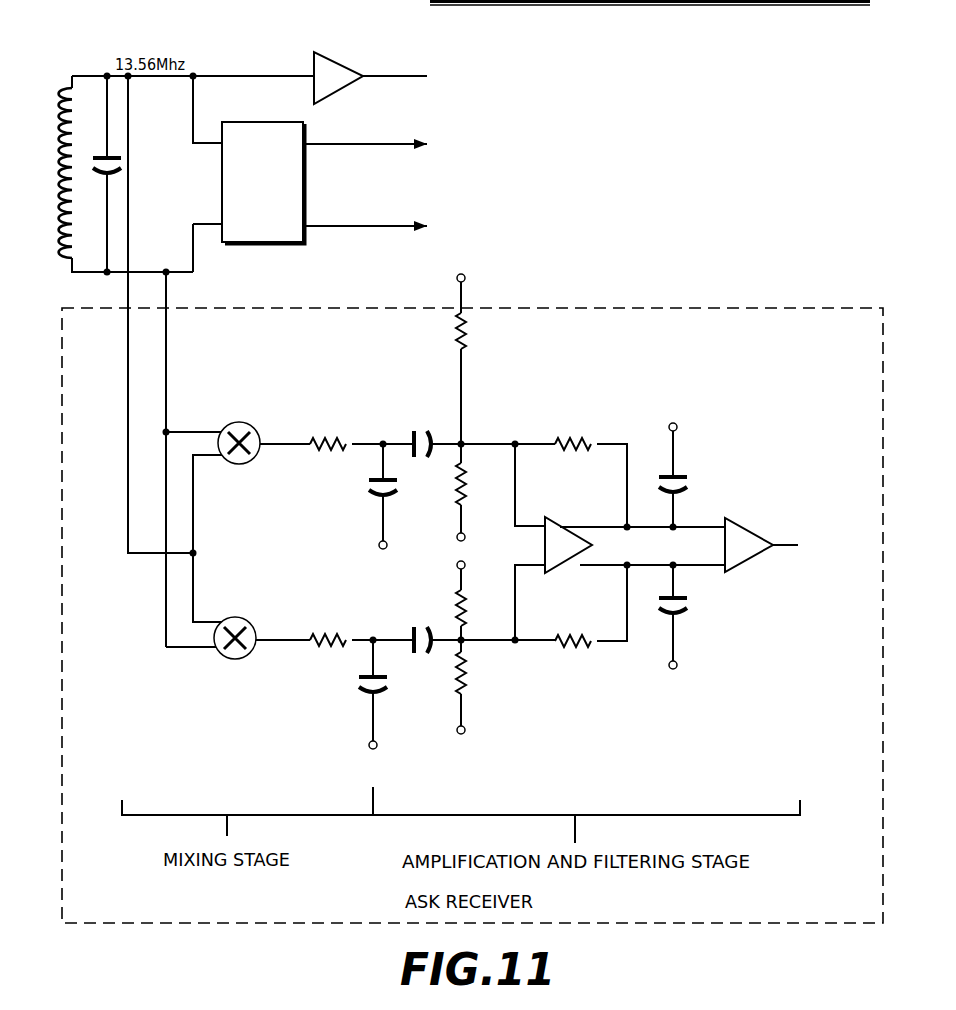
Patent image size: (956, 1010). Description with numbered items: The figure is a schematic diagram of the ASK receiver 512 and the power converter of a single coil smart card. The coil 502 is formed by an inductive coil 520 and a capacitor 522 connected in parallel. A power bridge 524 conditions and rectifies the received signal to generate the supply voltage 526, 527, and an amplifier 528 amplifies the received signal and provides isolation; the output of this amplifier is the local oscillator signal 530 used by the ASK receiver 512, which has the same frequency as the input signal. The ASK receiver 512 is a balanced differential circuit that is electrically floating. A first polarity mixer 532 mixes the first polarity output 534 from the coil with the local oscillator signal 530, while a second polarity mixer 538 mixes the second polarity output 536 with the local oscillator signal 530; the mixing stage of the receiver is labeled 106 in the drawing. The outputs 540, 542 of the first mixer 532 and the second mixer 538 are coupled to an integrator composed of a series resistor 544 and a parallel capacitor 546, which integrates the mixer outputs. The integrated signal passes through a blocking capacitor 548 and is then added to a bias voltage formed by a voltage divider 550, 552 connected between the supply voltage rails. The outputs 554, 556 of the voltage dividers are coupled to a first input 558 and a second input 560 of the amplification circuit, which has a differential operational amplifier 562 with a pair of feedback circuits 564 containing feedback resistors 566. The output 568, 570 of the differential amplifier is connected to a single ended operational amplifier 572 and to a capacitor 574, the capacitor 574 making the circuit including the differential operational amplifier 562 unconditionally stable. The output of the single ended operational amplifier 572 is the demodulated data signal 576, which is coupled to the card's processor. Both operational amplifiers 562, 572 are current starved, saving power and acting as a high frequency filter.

The coil 502 is at (42, 72).
The inductive coil 520 is at (66, 262).
The capacitor 522 is at (112, 155).
The power bridge 524 is at (250, 108).
The supply voltage 526 is at (408, 146).
The supply voltage 527 is at (403, 222).
The amplifier 528 is at (327, 52).
The local oscillator signal 530 is at (417, 74).
The ASK receiver 512 is at (368, 306).
The first polarity output 534 is at (166, 325).
The second polarity output 536 is at (128, 370).
The first polarity mixer 532 is at (240, 464).
The second polarity mixer 538 is at (250, 656).
The mixing stage 106 is at (203, 620).
The output of the first mixer 540 is at (300, 444).
The output of the second mixer 542 is at (263, 632).
The series resistor 544 is at (352, 432).
The parallel capacitor 546 is at (410, 483).
The blocking capacitor 548 is at (424, 428).
The voltage divider 550 is at (468, 330).
The voltage divider 552 is at (478, 492).
The output of the voltage divider 554 is at (482, 488).
The output of the voltage divider 556 is at (500, 643).
The first input 558 is at (525, 520).
The second input 560 is at (520, 578).
The differential operational amplifier 562 is at (560, 523).
The feedback circuit 564 is at (600, 443).
The feedback resistor 566 is at (560, 441).
The output of the amplifier 568 is at (706, 529).
The output of the amplifier 570 is at (603, 573).
The single ended operational amplifier 572 is at (736, 521).
The capacitor 574 is at (662, 487).
The demodulated data signal 576 is at (782, 544).